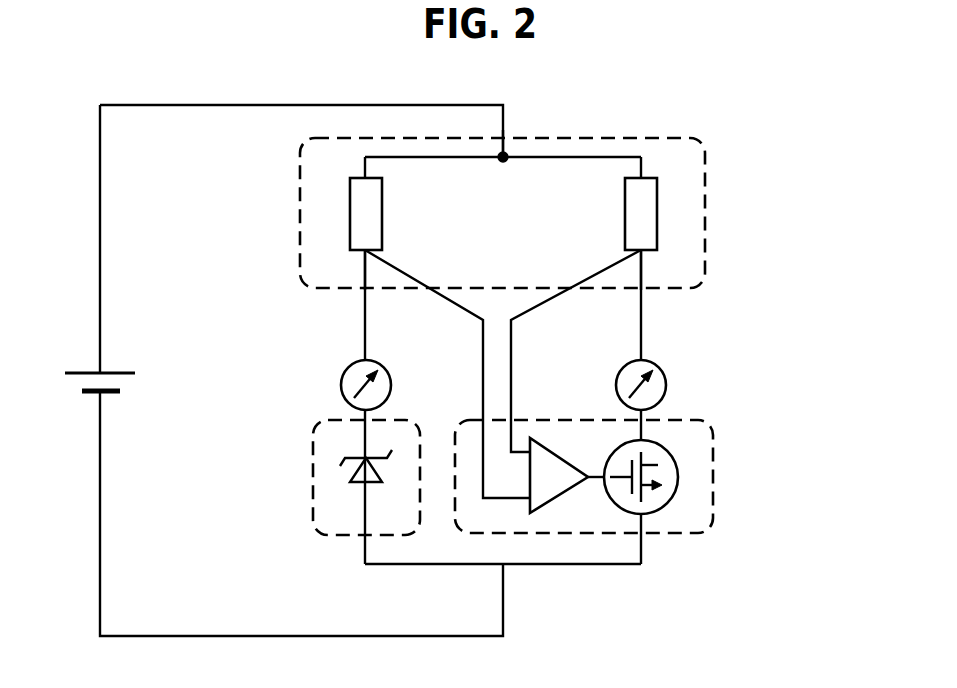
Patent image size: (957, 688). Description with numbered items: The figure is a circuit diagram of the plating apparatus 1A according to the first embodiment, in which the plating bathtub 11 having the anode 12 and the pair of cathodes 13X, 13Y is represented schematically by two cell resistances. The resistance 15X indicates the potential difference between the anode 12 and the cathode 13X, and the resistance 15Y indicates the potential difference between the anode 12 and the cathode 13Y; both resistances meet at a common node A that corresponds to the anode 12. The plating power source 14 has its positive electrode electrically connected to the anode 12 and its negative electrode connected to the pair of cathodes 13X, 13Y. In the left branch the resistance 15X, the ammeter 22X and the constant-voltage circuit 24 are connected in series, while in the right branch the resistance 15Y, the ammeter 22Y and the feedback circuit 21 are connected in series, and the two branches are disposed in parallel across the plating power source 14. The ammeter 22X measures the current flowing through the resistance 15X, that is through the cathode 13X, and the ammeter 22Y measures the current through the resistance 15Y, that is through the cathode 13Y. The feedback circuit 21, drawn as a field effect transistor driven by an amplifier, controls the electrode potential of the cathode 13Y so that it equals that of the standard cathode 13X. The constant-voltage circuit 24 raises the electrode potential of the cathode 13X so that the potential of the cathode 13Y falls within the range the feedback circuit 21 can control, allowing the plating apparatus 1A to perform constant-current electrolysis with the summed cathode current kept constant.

The plating apparatus 1A is at (737, 92).
The plating bathtub 11 is at (706, 181).
The anode 12 is at (504, 156).
The cathode 13X is at (364, 252).
The cathode 13Y is at (642, 252).
The plating power source 14 is at (85, 373).
The resistance 15X is at (350, 210).
The resistance 15Y is at (657, 212).
The feedback circuit 21 is at (714, 465).
The ammeter 22X is at (341, 386).
The ammeter 22Y is at (667, 385).
The constant-voltage circuit 24 is at (313, 466).
The node A is at (501, 169).